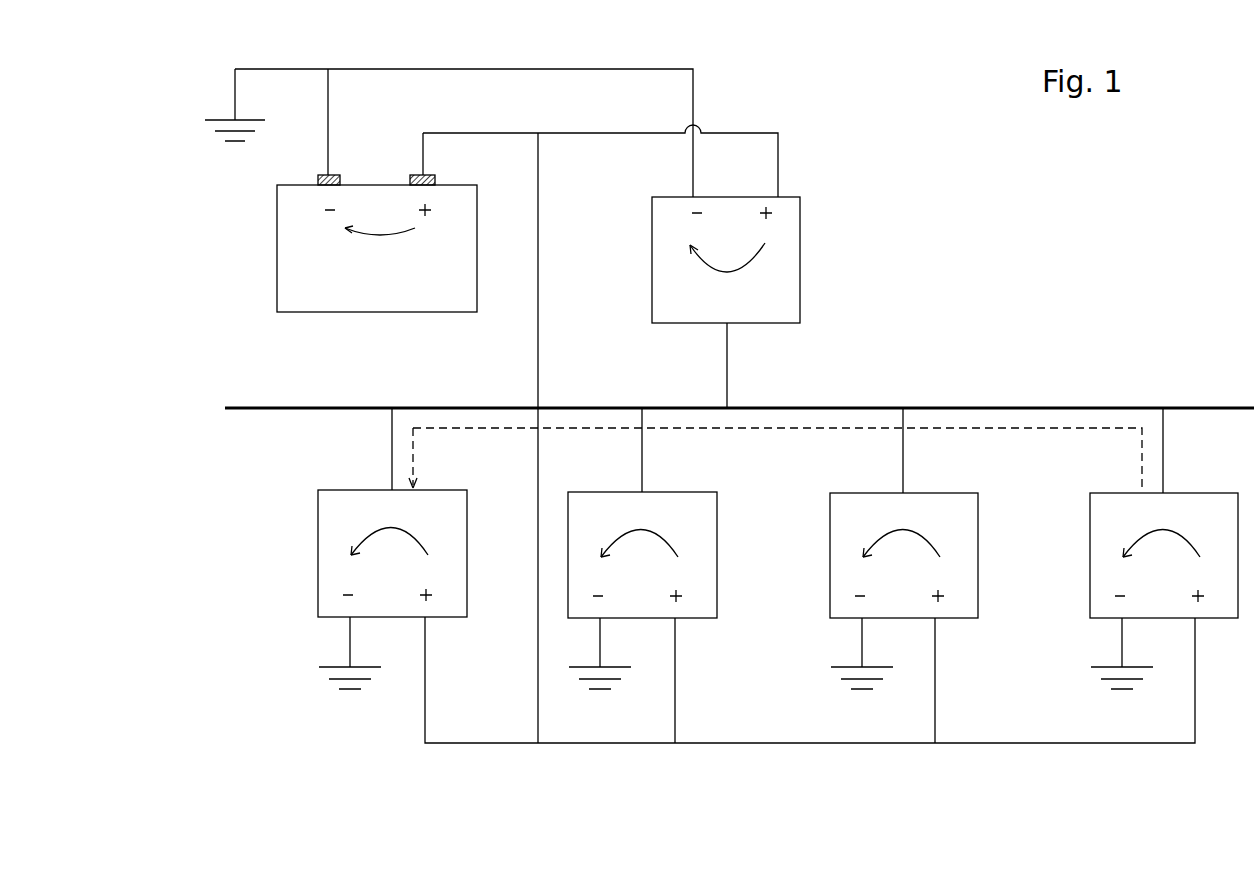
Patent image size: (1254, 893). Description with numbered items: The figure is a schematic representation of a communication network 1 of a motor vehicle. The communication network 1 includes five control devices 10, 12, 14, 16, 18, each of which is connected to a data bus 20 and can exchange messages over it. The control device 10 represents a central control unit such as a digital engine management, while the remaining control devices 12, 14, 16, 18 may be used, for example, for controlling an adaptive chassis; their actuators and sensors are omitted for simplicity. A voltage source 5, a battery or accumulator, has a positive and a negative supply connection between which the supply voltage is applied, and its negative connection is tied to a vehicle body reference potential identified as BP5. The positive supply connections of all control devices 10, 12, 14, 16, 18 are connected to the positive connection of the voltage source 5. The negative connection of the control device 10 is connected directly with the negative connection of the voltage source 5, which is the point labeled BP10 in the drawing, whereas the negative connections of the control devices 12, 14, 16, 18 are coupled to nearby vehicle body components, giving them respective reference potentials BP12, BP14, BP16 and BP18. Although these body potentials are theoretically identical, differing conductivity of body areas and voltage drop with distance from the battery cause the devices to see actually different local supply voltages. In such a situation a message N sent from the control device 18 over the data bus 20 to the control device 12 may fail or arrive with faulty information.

The communication network 1 is at (1027, 247).
The voltage source 5 is at (277, 250).
The control device 10 is at (800, 258).
The control device 12 is at (318, 553).
The control device 14 is at (717, 553).
The control device 16 is at (830, 555).
The control device 18 is at (1090, 557).
The data bus 20 is at (1020, 407).
The message N is at (775, 459).
The reference potential BP5 is at (221, 147).
The reference point of source 10 BP10 is at (281, 160).
The reference potential BP12 is at (350, 674).
The reference potential BP14 is at (600, 674).
The reference potential BP16 is at (862, 674).
The reference potential BP18 is at (1122, 674).